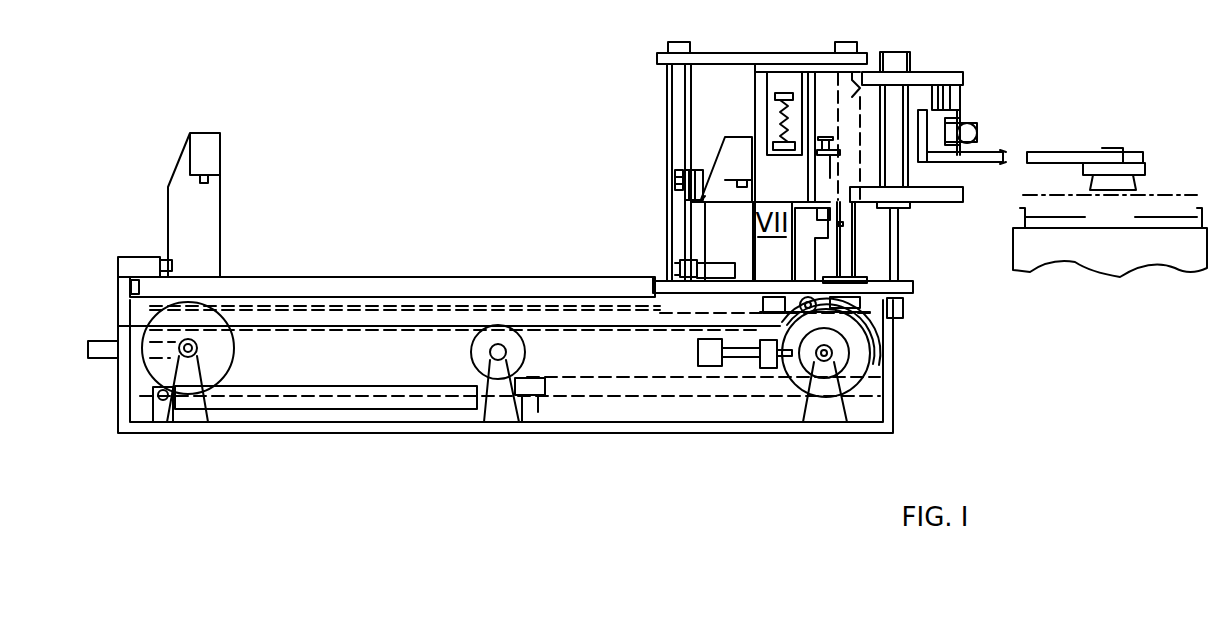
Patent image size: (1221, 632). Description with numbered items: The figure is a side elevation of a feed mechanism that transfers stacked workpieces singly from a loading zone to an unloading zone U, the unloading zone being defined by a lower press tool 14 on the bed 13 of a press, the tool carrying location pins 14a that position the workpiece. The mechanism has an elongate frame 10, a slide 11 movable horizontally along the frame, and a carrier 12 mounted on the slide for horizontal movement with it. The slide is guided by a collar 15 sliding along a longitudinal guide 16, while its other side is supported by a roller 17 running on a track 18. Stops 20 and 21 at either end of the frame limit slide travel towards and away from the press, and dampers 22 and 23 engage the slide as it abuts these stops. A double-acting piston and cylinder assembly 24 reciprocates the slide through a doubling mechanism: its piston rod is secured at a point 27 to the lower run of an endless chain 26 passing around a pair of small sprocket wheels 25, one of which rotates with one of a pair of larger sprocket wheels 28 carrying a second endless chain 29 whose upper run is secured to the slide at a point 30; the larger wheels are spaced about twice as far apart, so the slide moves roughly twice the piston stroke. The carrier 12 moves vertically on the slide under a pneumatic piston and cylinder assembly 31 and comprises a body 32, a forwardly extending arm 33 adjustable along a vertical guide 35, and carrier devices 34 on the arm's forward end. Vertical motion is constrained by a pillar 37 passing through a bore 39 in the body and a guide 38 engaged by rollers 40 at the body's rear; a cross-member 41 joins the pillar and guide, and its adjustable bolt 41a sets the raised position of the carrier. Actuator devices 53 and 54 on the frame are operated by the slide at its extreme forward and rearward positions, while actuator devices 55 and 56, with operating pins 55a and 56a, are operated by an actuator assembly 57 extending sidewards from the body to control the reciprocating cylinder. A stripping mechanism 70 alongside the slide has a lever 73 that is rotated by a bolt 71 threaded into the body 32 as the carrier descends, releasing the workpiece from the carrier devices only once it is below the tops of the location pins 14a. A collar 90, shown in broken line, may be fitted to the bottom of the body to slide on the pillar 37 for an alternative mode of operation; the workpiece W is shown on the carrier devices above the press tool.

The frame 10 is at (888, 377).
The slide 11 is at (905, 292).
The carrier 12 is at (965, 72).
The bed 13 is at (1120, 292).
The lower press tool 14 is at (1063, 256).
The location pins 14a is at (1111, 217).
The collar 15 is at (676, 300).
The guide 16 is at (478, 292).
The roller 17 is at (814, 299).
The track 18 is at (565, 325).
The stop 20 is at (880, 322).
The stop 21 is at (140, 290).
The buffer or damper 22 is at (766, 368).
The buffer or damper 23 is at (105, 358).
The double-acting piston and cylinder assembly 24 is at (365, 408).
The sprocket wheels 25 is at (515, 352).
The endless chain 26 is at (605, 386).
The point 27 is at (534, 400).
The sprocket wheels 28 is at (215, 353).
The endless chain 29 is at (275, 398).
The point 30 is at (765, 305).
The pneumatic piston and cylinder assembly 31 is at (903, 209).
The body 32 is at (760, 137).
The arm 33 is at (990, 157).
The carrier devices 34 is at (1132, 188).
The vertical guide 35 is at (945, 99).
The pillar 37 is at (845, 242).
The guide 38 is at (678, 104).
The bore 39 is at (862, 60).
The rollers 40 is at (675, 178).
The cross-member 41 is at (727, 58).
The bolt 41a is at (773, 112).
The actuator device 53 is at (718, 268).
The actuator device 54 is at (150, 262).
The actuator device 55 is at (203, 147).
The operating pin 55a is at (208, 178).
The actuator device 56 is at (751, 123).
The operating pin 56a is at (740, 182).
The actuator assembly 57 is at (698, 204).
The stripping mechanism 70 is at (855, 229).
The bolt 71 is at (847, 152).
The lever 73 is at (818, 226).
The collar 90 is at (905, 206).
The work line W is at (1040, 194).
The unloading zone u is at (1185, 280).